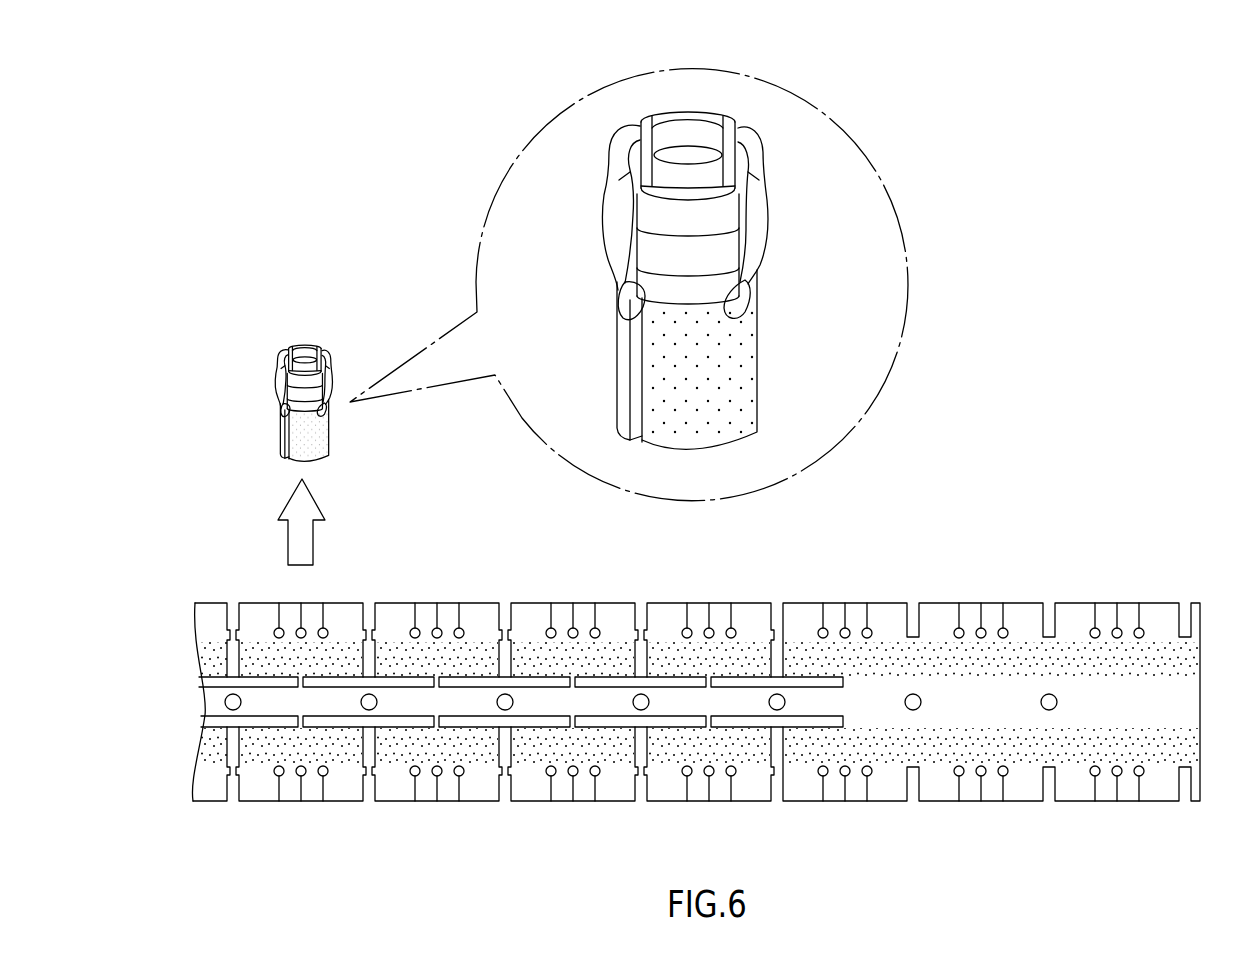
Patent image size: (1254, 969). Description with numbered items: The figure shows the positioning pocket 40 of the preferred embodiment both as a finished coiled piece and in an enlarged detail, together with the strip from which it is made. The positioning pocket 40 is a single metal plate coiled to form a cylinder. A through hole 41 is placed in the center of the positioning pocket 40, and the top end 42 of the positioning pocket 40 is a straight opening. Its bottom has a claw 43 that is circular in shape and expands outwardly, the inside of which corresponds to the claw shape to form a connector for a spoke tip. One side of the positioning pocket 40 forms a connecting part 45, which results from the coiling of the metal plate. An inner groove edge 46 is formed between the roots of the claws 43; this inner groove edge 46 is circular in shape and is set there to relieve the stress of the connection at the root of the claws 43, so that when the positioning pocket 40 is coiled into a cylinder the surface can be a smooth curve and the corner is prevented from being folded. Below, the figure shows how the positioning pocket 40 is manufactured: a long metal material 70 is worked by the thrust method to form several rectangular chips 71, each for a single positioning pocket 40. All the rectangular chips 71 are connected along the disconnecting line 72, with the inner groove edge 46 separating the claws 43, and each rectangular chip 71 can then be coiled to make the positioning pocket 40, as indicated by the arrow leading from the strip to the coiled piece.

The positioning pocket 40 is at (815, 266).
The through hole 41 is at (685, 168).
The top end 42 is at (720, 447).
The claw 43 is at (603, 217).
The connecting part 45 is at (637, 365).
The inner groove edge 46 is at (743, 295).
The long metal material 70 is at (1005, 697).
The rectangular chip 71 is at (346, 603).
The disconnecting line 72 is at (279, 627).